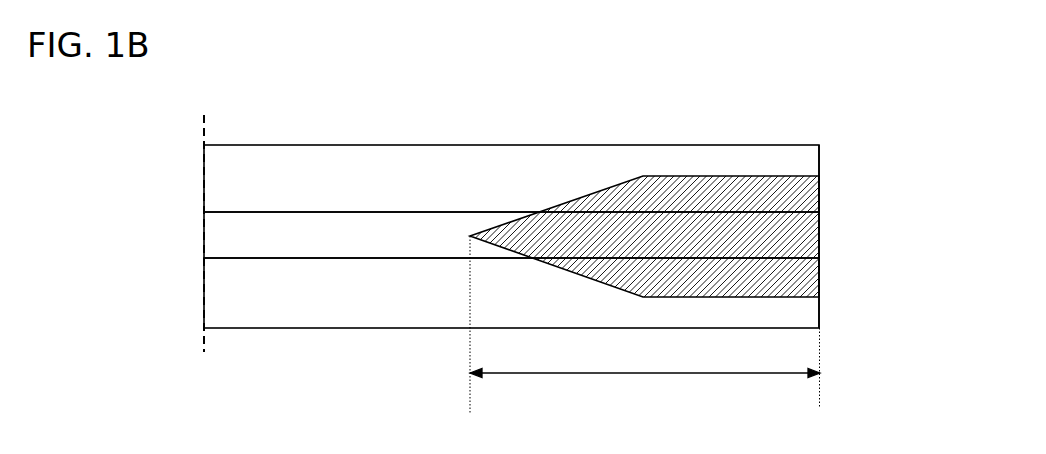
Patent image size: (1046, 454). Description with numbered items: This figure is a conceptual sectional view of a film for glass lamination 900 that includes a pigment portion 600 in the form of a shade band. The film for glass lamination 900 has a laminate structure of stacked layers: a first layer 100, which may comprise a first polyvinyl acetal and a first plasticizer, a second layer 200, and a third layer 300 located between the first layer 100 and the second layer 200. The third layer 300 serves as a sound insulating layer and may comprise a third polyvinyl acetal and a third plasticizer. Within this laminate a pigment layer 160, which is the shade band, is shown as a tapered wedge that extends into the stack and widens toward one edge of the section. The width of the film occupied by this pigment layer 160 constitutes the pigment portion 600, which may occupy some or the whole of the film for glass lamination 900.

The film for glass lamination 900 is at (267, 77).
The first layer 100 is at (273, 185).
The third layer 300 is at (231, 237).
The second layer 200 is at (395, 287).
The pigment layer 160 is at (593, 219).
The pigment portion 600 is at (645, 333).